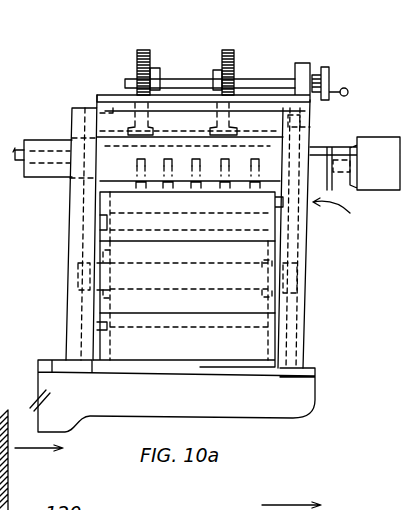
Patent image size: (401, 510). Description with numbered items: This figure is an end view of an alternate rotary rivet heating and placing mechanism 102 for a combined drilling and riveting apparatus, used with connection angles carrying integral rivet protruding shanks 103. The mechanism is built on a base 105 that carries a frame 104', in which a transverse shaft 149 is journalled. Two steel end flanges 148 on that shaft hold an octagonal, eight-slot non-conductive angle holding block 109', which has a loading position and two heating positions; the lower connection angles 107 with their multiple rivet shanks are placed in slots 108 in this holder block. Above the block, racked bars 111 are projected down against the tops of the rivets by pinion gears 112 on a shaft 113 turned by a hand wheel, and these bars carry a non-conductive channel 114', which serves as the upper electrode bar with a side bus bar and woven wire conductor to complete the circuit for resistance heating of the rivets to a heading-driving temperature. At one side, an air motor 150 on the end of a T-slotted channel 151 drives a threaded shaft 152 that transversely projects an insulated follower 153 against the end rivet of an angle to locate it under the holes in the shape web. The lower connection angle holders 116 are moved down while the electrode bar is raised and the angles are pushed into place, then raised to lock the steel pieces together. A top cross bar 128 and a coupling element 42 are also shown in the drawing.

The rivet heating and placing mechanism 102 is at (326, 264).
The integral rivet protruding shanks 103 is at (137, 168).
The frame 104' is at (62, 227).
The base 105 is at (192, 406).
The lower connection angles 107 is at (216, 192).
The slots 108 is at (124, 203).
The eight slot non-conductive angle holding block 109' is at (184, 340).
The racked bars 111 is at (233, 123).
The pinion gears 112 is at (233, 78).
The shaft 113 is at (205, 79).
The non-conductive channel 114' is at (201, 120).
The lower connection angle holders 116 is at (3, 496).
The top cross bar 128 is at (114, 97).
The steel end flanges 148 is at (111, 263).
The transverse shaft 149 is at (130, 286).
The air motor 150 is at (392, 167).
The T-slotted channel 151 is at (59, 178).
The threaded shaft 152 is at (20, 162).
The insulated follower 153 is at (302, 146).
The shaft coupling 42 is at (335, 162).